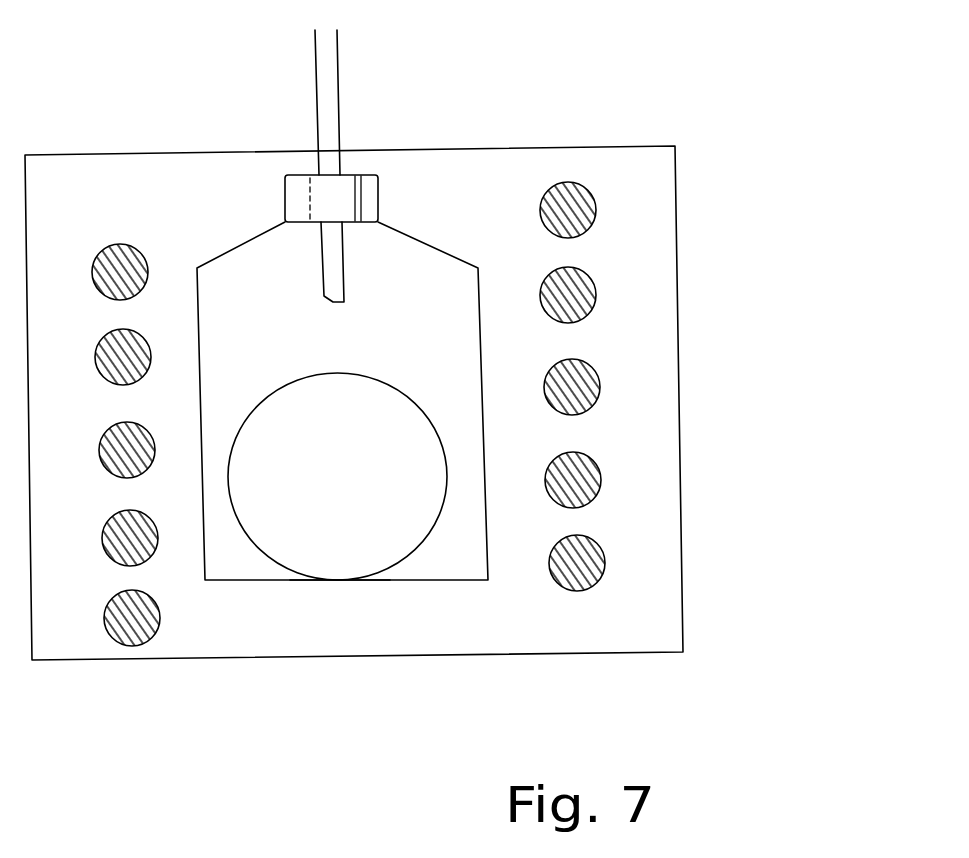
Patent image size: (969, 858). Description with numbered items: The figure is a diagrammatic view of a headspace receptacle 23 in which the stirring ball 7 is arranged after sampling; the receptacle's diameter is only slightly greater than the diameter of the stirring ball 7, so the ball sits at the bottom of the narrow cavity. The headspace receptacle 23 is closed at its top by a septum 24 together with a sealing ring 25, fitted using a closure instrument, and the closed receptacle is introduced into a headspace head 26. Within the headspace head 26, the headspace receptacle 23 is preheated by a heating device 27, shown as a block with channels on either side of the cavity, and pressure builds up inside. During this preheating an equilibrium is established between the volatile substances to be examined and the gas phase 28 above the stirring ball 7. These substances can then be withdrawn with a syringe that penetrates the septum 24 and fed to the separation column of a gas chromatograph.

The stirring ball 7 is at (428, 533).
The headspace receptacle 23 is at (315, 597).
The septum 24 is at (357, 175).
The sealing ring 25 is at (378, 195).
The headspace head 26 is at (600, 197).
The heating device 27 is at (678, 360).
The gas phase 28 is at (242, 283).